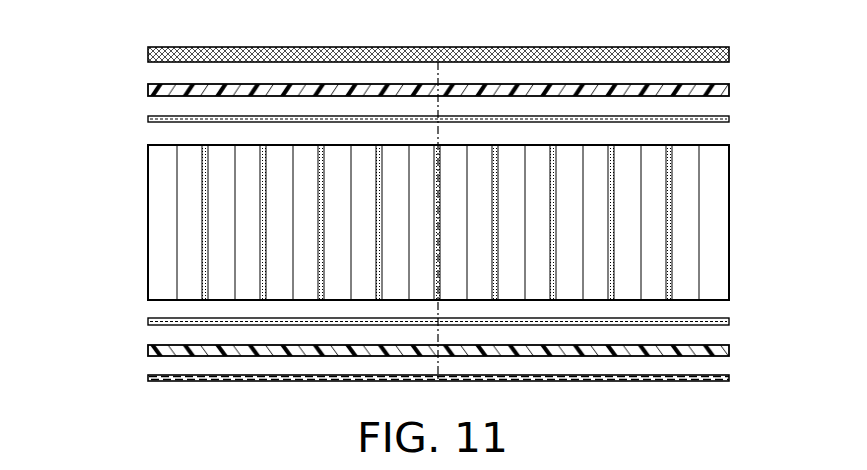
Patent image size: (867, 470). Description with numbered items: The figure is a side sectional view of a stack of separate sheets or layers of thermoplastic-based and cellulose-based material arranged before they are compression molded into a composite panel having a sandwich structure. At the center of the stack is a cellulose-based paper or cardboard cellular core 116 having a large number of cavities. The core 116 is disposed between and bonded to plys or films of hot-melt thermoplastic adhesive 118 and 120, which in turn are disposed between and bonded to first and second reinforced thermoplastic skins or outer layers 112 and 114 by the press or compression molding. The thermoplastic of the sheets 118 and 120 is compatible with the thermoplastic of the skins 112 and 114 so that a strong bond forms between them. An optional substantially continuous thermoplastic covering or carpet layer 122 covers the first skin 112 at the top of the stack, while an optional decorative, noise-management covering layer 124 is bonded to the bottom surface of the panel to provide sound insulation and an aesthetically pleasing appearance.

The first reinforced thermoplastic skin 112 is at (148, 89).
The second reinforced thermoplastic skin 114 is at (148, 350).
The cellular core 116 is at (147, 222).
The hot-melt adhesive sheet 118 is at (148, 119).
The hot-melt adhesive sheet 120 is at (148, 321).
The carpet layer 122 is at (148, 53).
The covering layer 124 is at (148, 378).